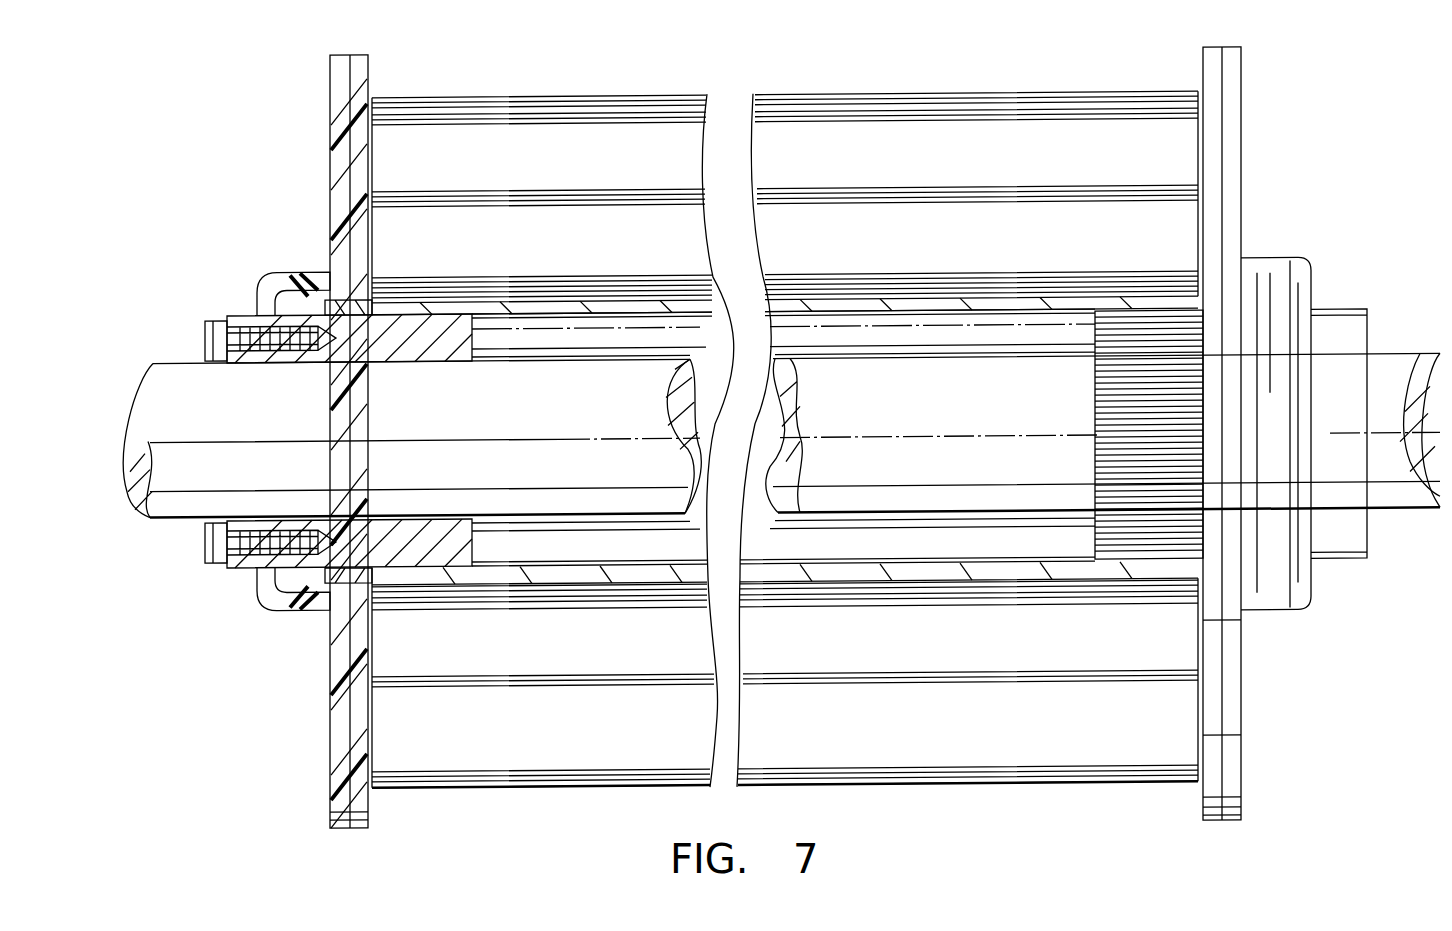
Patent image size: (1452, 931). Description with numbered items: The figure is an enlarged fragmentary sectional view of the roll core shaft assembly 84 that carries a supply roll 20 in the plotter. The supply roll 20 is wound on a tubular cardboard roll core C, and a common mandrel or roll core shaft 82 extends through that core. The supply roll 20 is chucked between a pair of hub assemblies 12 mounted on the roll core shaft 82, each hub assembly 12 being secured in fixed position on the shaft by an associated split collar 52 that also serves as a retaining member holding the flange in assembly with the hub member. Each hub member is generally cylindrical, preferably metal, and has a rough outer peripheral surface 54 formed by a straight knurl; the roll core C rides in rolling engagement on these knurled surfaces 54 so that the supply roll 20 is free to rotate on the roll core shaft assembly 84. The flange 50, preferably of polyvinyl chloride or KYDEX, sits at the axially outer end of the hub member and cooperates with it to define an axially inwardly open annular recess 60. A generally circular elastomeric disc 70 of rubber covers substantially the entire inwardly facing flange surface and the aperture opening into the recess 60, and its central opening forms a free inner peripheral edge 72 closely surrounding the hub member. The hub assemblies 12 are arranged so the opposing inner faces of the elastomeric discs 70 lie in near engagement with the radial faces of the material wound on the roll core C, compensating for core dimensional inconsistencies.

The hub assembly 12 is at (278, 108).
The supply roll 20 is at (640, 786).
The flange 50 is at (330, 710).
The split collar 52 is at (232, 560).
The outer peripheral surface 54 is at (417, 318).
The annular recess 60 is at (298, 582).
The elastomeric disc 70 is at (367, 797).
The inner peripheral edge 72 is at (318, 268).
The roll core shaft 82 is at (185, 380).
The roll core shaft assembly 84 is at (224, 706).
The roll core C is at (578, 300).